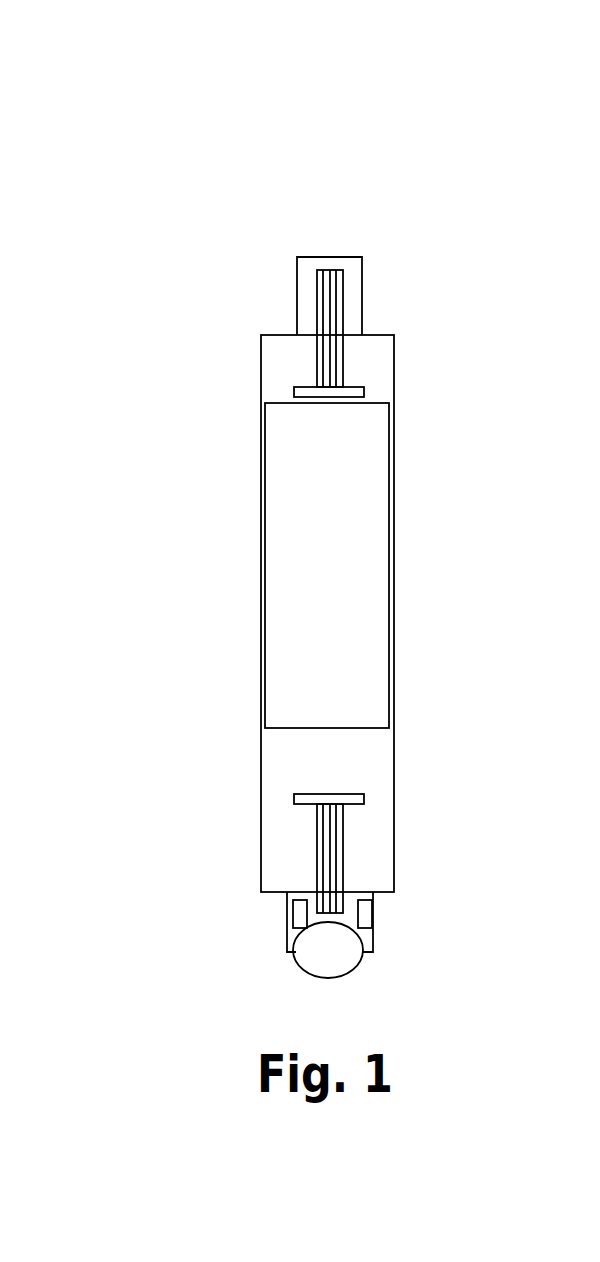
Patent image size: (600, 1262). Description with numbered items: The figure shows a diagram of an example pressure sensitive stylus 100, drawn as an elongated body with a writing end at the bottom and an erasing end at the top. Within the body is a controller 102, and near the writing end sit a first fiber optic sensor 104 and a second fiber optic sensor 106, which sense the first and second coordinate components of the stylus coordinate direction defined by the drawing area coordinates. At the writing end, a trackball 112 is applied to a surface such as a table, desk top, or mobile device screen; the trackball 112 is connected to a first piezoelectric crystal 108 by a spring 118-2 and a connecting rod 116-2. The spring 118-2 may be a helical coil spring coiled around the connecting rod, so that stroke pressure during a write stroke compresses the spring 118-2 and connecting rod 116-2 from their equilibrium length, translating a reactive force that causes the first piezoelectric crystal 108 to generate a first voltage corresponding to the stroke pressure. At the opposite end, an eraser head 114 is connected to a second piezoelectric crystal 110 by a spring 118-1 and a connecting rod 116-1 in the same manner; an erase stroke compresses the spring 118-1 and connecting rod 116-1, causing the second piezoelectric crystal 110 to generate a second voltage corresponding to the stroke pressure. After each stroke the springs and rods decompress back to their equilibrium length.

The pressure sensitive stylus 100 is at (140, 145).
The controller 102 is at (303, 547).
The first fiber optic sensor 104 is at (290, 914).
The second fiber optic sensor 106 is at (365, 914).
The first piezoelectric crystal 108 is at (298, 797).
The second piezoelectric crystal 110 is at (295, 392).
The trackball 112 is at (318, 962).
The eraser head 114 is at (353, 297).
The connecting rod 116-1 is at (332, 350).
The connecting rod 116-2 is at (333, 833).
The spring 118-1 is at (317, 312).
The spring 118-2 is at (318, 865).